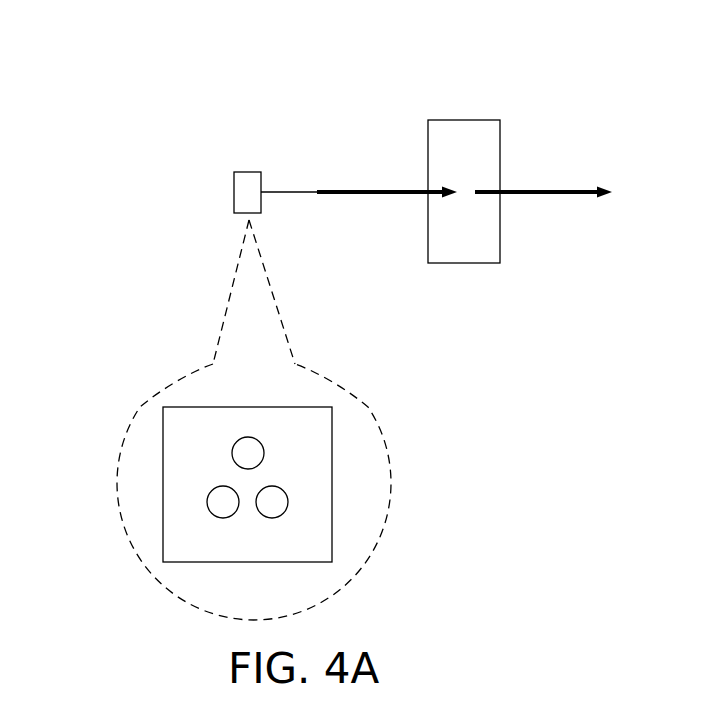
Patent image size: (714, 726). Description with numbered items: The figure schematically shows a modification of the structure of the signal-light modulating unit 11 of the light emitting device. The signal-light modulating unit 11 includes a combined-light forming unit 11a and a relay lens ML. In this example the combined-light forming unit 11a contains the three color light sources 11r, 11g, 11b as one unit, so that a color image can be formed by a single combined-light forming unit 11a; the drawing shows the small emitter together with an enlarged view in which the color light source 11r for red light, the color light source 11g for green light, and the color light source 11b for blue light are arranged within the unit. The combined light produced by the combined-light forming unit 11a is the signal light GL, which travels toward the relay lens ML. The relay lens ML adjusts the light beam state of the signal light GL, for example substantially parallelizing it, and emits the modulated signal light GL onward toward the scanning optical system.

The signal-light modulating unit 11 is at (250, 107).
The combined-light forming unit 11a is at (253, 182).
The color light source 11r is at (252, 448).
The color light source 11g is at (215, 506).
The color light source 11b is at (277, 507).
The relay lens ML is at (438, 140).
The signal light GL is at (357, 194).